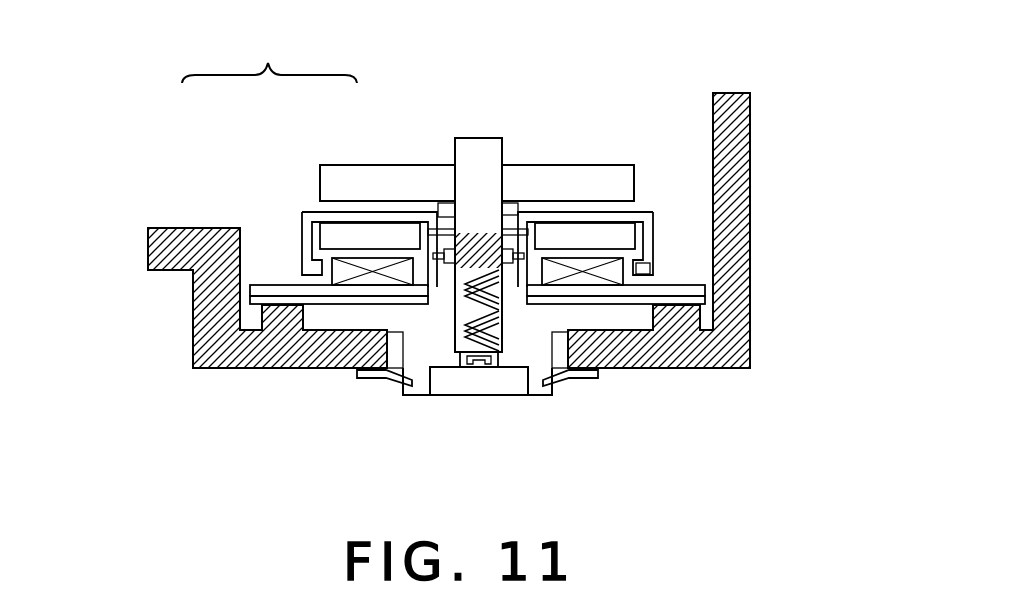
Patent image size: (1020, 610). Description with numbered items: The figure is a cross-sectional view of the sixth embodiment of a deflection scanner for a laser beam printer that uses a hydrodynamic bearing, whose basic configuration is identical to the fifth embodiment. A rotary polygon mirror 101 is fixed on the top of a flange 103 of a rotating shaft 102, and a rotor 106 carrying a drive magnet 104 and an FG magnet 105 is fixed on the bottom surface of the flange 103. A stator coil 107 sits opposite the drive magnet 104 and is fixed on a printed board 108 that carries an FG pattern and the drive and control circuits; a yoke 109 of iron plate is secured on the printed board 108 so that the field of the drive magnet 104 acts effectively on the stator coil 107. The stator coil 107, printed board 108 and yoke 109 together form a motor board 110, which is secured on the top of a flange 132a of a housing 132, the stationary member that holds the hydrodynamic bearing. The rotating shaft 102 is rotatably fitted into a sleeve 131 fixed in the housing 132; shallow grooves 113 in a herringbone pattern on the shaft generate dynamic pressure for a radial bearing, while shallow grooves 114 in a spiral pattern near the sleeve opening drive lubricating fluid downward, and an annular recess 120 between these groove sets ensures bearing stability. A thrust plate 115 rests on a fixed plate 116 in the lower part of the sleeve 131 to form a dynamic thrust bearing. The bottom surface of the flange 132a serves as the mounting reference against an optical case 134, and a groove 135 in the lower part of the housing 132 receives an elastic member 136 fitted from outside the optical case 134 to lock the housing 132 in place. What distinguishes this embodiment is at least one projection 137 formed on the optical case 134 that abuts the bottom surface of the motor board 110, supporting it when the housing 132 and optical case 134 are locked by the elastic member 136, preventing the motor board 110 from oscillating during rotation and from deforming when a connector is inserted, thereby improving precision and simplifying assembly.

The rotary polygon mirror 101 is at (553, 190).
The rotating shaft 102 is at (473, 138).
The flange 103 is at (450, 215).
The drive magnet 104 is at (592, 237).
The FG magnet 105 is at (655, 262).
The rotor 106 is at (647, 213).
The stator coil 107 is at (367, 260).
The printed board 108 is at (283, 287).
The yoke 109 is at (265, 285).
The motor board 110 is at (269, 47).
The shallow grooves 113 is at (457, 343).
The shallow grooves 114 is at (455, 245).
The thrust plate 115 is at (463, 373).
The fixed plate 116 is at (490, 380).
The annular recess 120 is at (508, 237).
The sleeve 131 is at (423, 353).
The housing 132 is at (572, 313).
The flange 132a is at (277, 370).
The optical case 134 is at (193, 370).
The groove 135 is at (545, 395).
The elastic member 136 is at (572, 383).
The projection 137 is at (673, 313).